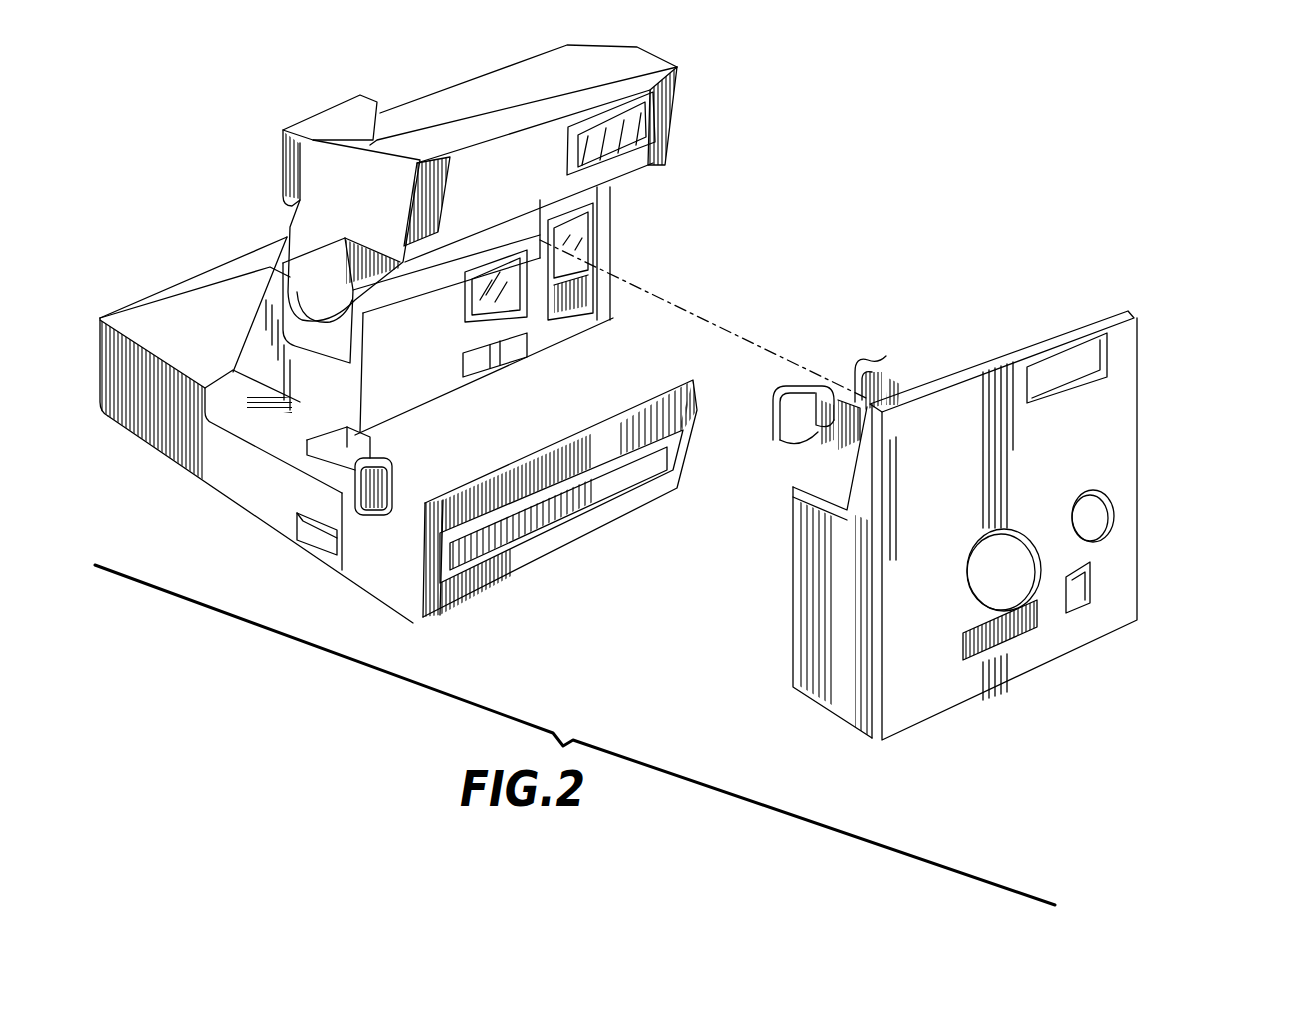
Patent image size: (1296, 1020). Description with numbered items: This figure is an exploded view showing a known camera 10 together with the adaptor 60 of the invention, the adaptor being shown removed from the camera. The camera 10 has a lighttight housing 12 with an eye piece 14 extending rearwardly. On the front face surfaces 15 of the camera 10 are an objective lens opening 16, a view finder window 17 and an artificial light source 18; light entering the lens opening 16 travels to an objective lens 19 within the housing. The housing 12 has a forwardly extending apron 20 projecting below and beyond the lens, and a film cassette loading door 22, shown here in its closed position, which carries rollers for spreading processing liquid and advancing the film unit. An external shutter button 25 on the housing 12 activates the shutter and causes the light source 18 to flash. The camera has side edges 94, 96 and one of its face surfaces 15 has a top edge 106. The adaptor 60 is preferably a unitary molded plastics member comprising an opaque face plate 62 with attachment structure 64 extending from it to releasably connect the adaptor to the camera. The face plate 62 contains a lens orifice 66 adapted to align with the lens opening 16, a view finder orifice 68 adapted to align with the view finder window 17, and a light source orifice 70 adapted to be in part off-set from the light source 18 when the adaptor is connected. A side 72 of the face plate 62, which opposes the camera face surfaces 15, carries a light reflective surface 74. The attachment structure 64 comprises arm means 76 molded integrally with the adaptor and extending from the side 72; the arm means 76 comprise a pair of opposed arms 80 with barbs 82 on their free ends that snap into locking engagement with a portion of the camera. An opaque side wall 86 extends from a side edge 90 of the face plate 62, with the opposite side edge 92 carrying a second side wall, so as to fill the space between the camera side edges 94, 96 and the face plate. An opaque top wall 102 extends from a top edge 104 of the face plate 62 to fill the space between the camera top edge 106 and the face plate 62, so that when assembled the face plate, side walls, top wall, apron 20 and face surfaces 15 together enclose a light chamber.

The camera 10 is at (773, 121).
The lighttight housing 12 is at (200, 440).
The eye piece 14 is at (320, 105).
The front face surfaces 15 is at (557, 115).
The objective lens opening 16 is at (470, 320).
The view finder window 17 is at (580, 250).
The artificial light source 18 is at (635, 127).
The objective lens 19 is at (470, 300).
The apron 20 is at (635, 375).
The film cassette loading door 22 is at (365, 585).
The shutter button 25 is at (400, 480).
The adaptor 60 is at (1198, 355).
The face plate 62 is at (1100, 432).
The attachment structure 64 is at (876, 380).
The lens orifice 66 is at (1022, 583).
The view finder orifice 68 is at (1082, 500).
The light source orifice 70 is at (1085, 382).
The side of the face plate 72 is at (963, 364).
The light reflective surface 74 is at (987, 348).
The arm means 76 is at (790, 392).
The opposed arms 80 is at (898, 386).
The barbs 82 is at (862, 362).
The side wall 86 is at (830, 620).
The side edge of the face plate 90 is at (860, 700).
The side edge of the face plate 92 is at (1140, 549).
The side edge of the camera 94 is at (290, 455).
The side edge of the camera 96 is at (612, 284).
The top wall 102 is at (1080, 327).
The top edge of the face plate 104 is at (1110, 316).
The top edge of the camera face surface 106 is at (497, 132).